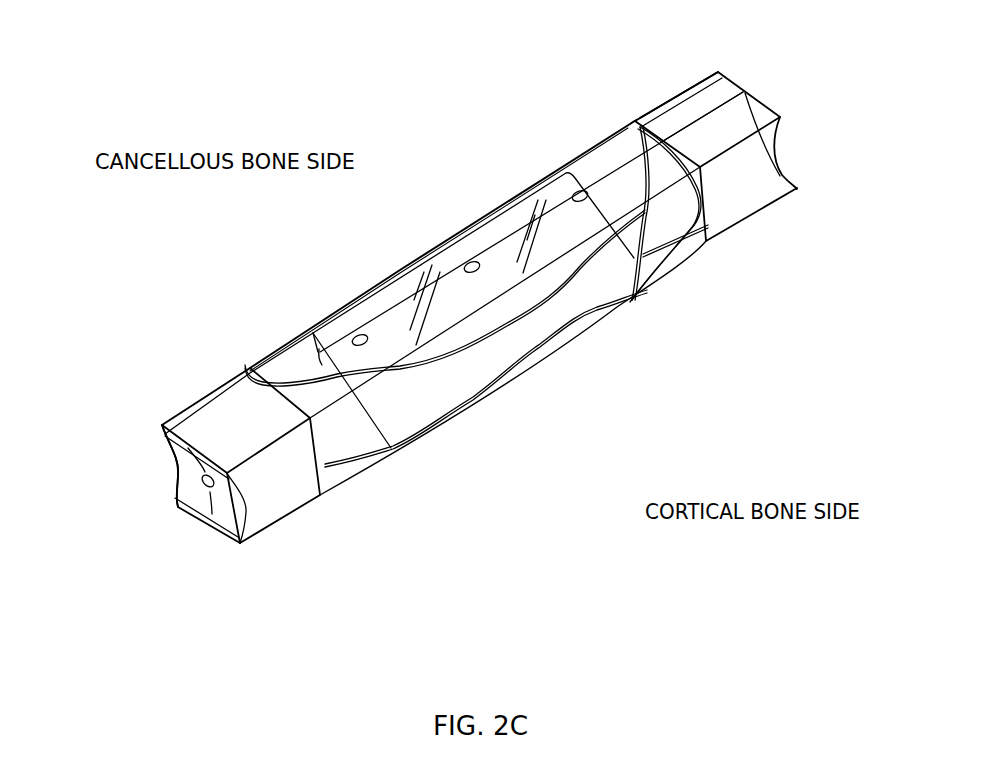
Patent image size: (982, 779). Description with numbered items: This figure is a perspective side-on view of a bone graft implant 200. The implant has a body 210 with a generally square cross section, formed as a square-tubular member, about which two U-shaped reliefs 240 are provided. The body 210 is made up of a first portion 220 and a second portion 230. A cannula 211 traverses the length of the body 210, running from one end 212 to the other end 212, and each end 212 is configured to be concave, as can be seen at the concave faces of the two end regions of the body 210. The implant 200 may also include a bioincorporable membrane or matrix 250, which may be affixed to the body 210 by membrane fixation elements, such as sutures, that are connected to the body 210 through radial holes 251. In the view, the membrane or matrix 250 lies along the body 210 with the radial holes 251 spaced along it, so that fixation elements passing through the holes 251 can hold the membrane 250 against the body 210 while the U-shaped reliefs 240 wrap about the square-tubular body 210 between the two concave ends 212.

The bone graft implant 200 is at (828, 74).
The body 210 is at (267, 538).
The cannula 211 is at (206, 495).
The end 212 is at (177, 449).
The first portion 220 is at (313, 500).
The second portion 230 is at (192, 405).
The U-shaped relief 240 is at (275, 343).
The bioincorporable membrane or matrix 250 is at (340, 303).
The radial hole 251 is at (367, 343).